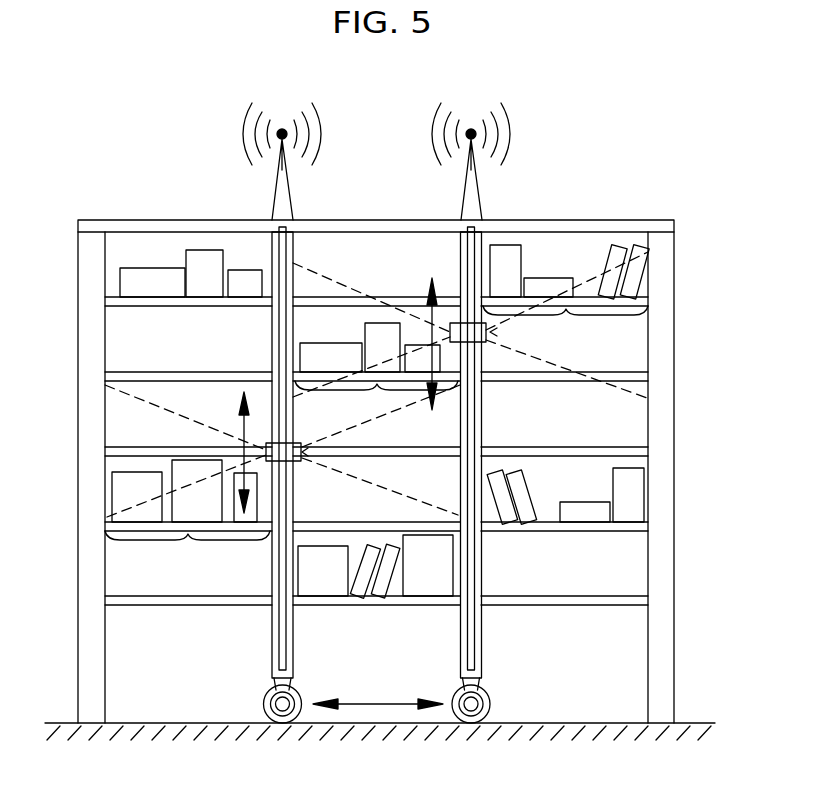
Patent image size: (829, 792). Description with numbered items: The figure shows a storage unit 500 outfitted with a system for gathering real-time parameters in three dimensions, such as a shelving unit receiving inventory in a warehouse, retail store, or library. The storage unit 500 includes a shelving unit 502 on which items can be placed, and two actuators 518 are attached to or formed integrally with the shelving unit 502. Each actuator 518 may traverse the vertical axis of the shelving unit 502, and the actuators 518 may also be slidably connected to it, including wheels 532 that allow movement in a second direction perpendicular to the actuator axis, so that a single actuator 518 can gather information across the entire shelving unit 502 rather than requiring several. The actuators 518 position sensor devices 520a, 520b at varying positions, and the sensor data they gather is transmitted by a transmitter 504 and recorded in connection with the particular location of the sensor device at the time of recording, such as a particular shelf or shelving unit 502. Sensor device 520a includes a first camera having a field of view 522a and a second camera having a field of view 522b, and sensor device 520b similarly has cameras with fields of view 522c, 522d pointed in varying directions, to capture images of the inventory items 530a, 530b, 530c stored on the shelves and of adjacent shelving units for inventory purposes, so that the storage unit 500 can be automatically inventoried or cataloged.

The storage unit 500 is at (578, 112).
The shelving unit 502 is at (675, 323).
The transmitter 504 is at (283, 196).
The actuator 518 is at (283, 628).
The sensor device 520a is at (297, 461).
The sensor device 520b is at (470, 340).
The field of view 522a is at (145, 400).
The field of view 522b is at (393, 490).
The field of view 522c is at (327, 282).
The field of view 522d is at (633, 395).
The inventory items 530a is at (376, 368).
The inventory items 530b is at (187, 512).
The inventory items 530c is at (566, 294).
The wheel 532 is at (262, 702).